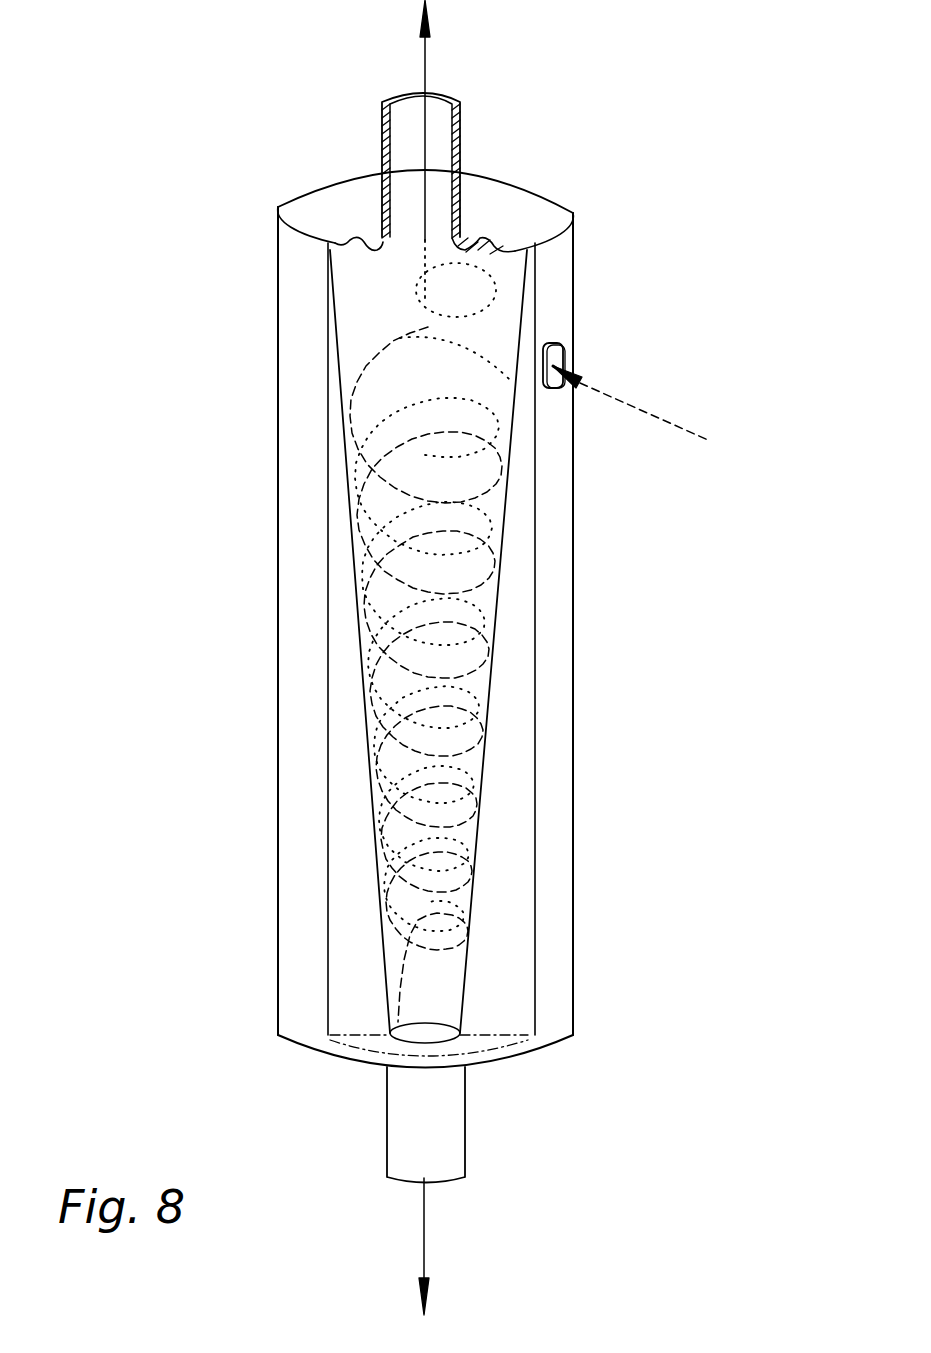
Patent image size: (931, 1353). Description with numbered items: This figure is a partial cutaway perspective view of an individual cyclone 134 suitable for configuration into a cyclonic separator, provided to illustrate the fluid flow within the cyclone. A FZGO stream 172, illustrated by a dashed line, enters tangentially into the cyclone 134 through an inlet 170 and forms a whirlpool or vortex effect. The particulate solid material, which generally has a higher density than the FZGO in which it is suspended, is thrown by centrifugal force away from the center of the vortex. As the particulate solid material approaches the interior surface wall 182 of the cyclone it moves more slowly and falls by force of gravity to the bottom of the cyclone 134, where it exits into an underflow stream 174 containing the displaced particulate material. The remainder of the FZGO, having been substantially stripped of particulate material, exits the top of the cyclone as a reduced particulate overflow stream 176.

The cyclone 134 is at (628, 186).
The tangential inlet port 170 is at (557, 357).
The FZGO stream 172 is at (680, 426).
The underflow stream 174 is at (425, 1245).
The overflow stream 176 is at (425, 62).
The interior surface wall 182 is at (500, 488).